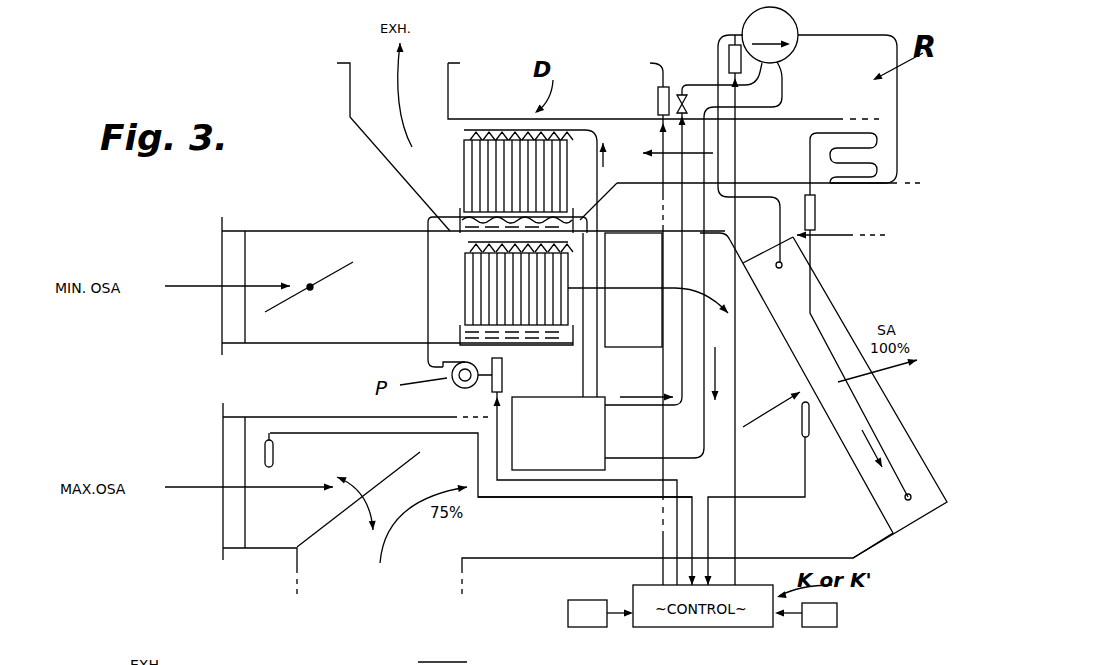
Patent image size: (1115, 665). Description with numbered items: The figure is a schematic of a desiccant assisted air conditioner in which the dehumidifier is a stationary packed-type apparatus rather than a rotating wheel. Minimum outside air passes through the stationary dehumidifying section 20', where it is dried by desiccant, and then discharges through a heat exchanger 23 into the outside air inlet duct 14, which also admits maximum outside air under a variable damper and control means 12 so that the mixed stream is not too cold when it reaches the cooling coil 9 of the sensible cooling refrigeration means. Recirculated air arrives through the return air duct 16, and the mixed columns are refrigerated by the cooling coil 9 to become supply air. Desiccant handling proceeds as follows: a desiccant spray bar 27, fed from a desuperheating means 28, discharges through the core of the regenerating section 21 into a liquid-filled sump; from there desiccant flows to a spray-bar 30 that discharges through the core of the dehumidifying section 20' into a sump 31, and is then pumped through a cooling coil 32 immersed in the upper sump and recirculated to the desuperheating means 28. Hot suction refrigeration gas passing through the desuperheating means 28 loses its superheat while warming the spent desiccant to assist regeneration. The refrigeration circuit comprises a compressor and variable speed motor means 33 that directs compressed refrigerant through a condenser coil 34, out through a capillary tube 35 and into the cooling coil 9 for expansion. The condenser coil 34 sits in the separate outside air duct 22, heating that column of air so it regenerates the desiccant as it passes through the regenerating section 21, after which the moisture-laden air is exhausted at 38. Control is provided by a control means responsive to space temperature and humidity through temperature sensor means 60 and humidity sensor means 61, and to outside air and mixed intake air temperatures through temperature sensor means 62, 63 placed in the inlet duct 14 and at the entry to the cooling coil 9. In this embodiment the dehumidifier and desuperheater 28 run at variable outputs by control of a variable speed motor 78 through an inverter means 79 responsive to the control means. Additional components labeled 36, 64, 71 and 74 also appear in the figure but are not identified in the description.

The cooling coil 9 is at (823, 305).
The variable damper and control means 12 is at (333, 515).
The outside air inlet duct 14 is at (585, 515).
The return air duct 16 is at (412, 537).
The dehumidifying section 20' is at (476, 289).
The regenerating section 21 is at (487, 167).
The outside air duct 22 is at (807, 151).
The heat exchanger 23 is at (635, 290).
The desiccant spray bar 27 is at (503, 130).
The desuperheating means 28 is at (558, 433).
The spray-bar 30 is at (463, 240).
The sump 31 is at (507, 337).
The cooling coil 32 is at (520, 217).
The compressor and variable speed motor means 33 is at (797, 18).
The condenser coil 34 is at (877, 133).
The capillary tube 35 is at (820, 210).
The refrigerant line 36 is at (782, 75).
The exhaust 38 is at (367, 46).
The temperature sensor means 60 is at (837, 613).
The humidity sensor means 61 is at (577, 593).
The temperature sensor means 62 is at (275, 452).
The temperature sensor means 63 is at (800, 437).
The minimum outside air damper 64 is at (328, 270).
The control valve 71 is at (728, 53).
The control line 74 is at (650, 63).
The variable speed motor 78 is at (455, 388).
The inverter means 79 is at (503, 375).